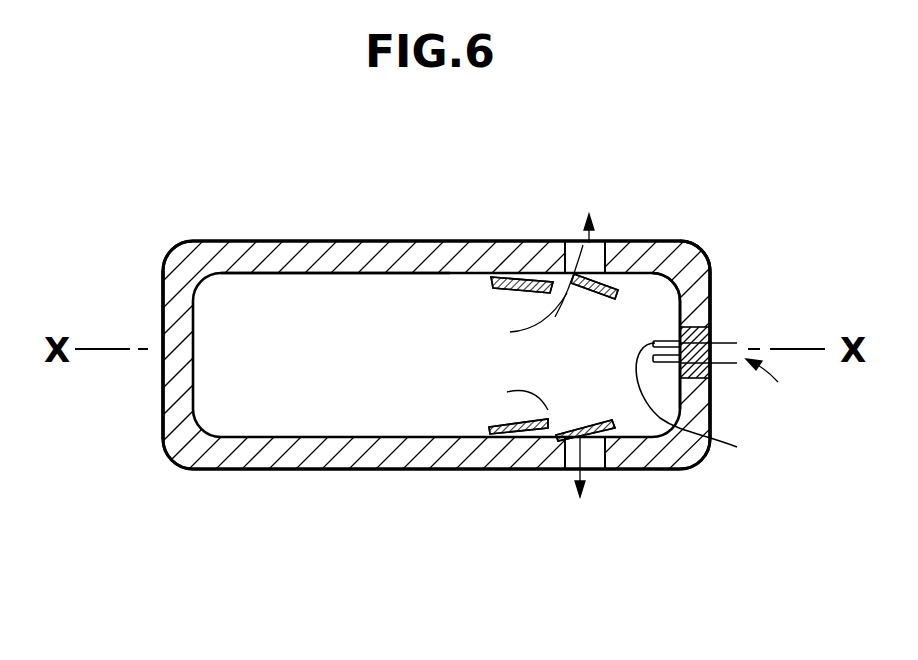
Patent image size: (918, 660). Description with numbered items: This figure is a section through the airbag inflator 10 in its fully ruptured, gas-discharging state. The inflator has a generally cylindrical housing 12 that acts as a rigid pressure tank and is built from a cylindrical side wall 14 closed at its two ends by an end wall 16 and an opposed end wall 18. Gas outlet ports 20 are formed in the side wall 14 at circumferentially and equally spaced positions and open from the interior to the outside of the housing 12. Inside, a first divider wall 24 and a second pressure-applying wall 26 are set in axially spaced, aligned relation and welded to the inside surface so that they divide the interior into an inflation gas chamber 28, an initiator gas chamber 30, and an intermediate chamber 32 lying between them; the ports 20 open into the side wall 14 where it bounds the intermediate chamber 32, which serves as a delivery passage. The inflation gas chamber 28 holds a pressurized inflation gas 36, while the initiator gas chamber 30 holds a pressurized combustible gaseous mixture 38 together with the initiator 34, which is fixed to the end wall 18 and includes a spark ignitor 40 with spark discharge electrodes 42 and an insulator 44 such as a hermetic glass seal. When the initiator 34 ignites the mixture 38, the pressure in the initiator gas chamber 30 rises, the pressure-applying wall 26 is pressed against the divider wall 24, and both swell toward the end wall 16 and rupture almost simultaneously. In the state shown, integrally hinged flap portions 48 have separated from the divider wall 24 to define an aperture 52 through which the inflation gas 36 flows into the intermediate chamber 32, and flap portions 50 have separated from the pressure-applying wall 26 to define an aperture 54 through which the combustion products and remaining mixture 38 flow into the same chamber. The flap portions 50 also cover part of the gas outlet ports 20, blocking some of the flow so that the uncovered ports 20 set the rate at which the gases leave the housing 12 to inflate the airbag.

The airbag inflator 10 is at (409, 217).
The housing 12 is at (274, 242).
The cylindrical side wall 14 is at (221, 242).
The end wall 16 is at (163, 322).
The end wall 18 is at (712, 310).
The gas outlet port 20 is at (597, 458).
The first divider wall 24 is at (540, 277).
The second pressure-applying wall 26 is at (622, 295).
The inflation gas chamber 28 is at (297, 295).
The initiator gas chamber 30 is at (657, 300).
The intermediate chamber 32 is at (594, 317).
The initiator 34 is at (775, 388).
The pressurized inflation gas 36 is at (339, 317).
The pressurized combustible gaseous mixture 38 is at (703, 290).
The spark ignitor 40 is at (706, 335).
The spark discharge electrodes 42 is at (706, 404).
The insulator 44 is at (710, 346).
The flap portions 48 is at (503, 424).
The flap portions 50 is at (590, 420).
The aperture 52 is at (534, 405).
The aperture 54 is at (603, 405).